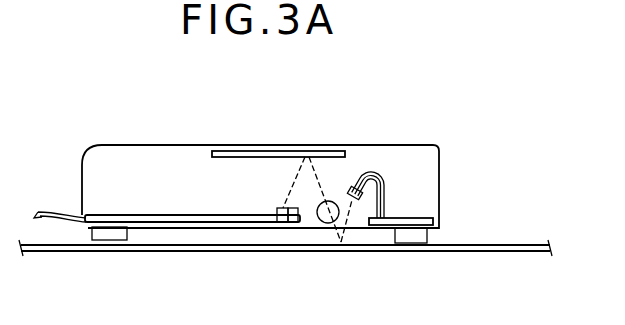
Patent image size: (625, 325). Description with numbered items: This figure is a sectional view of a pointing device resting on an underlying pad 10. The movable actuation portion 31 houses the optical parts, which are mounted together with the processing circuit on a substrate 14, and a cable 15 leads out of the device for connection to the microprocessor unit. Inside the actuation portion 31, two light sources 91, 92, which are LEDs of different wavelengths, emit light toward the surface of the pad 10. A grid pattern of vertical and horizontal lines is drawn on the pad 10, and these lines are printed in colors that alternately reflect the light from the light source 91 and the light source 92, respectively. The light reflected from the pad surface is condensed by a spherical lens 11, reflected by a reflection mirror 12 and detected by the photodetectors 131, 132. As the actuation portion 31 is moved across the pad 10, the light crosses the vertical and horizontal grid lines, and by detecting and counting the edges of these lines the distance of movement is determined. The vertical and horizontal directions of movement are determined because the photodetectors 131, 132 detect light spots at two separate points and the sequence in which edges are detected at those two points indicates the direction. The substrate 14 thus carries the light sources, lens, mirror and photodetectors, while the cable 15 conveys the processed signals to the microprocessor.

The actuation portion 31 is at (437, 147).
The reflection mirror 12 is at (304, 145).
The photodetector 131 is at (281, 210).
The photodetector 132 is at (292, 222).
The spherical lens 11 is at (324, 223).
The light source 91 is at (385, 182).
The light source 92 is at (387, 204).
The substrate 14 is at (205, 218).
The pad 10 is at (457, 252).
The cable 15 is at (66, 228).